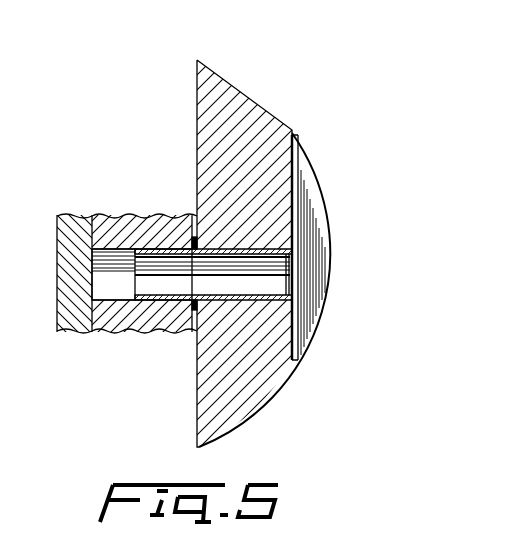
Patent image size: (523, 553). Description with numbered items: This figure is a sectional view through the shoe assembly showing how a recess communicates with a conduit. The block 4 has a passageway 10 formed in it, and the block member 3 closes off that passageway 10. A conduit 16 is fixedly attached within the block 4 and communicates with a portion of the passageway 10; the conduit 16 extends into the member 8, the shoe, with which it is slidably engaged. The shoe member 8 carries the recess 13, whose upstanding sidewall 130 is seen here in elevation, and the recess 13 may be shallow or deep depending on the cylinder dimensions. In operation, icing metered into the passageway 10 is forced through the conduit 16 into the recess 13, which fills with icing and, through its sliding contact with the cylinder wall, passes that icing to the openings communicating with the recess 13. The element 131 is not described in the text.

The block member 3 is at (77, 228).
The block 4 is at (138, 228).
The member 8 is at (233, 110).
The passageway 10 is at (103, 275).
The recess 13 is at (294, 173).
The conduit 16 is at (203, 283).
The upstanding sidewall 130 is at (308, 220).
The shaft 131 is at (290, 273).